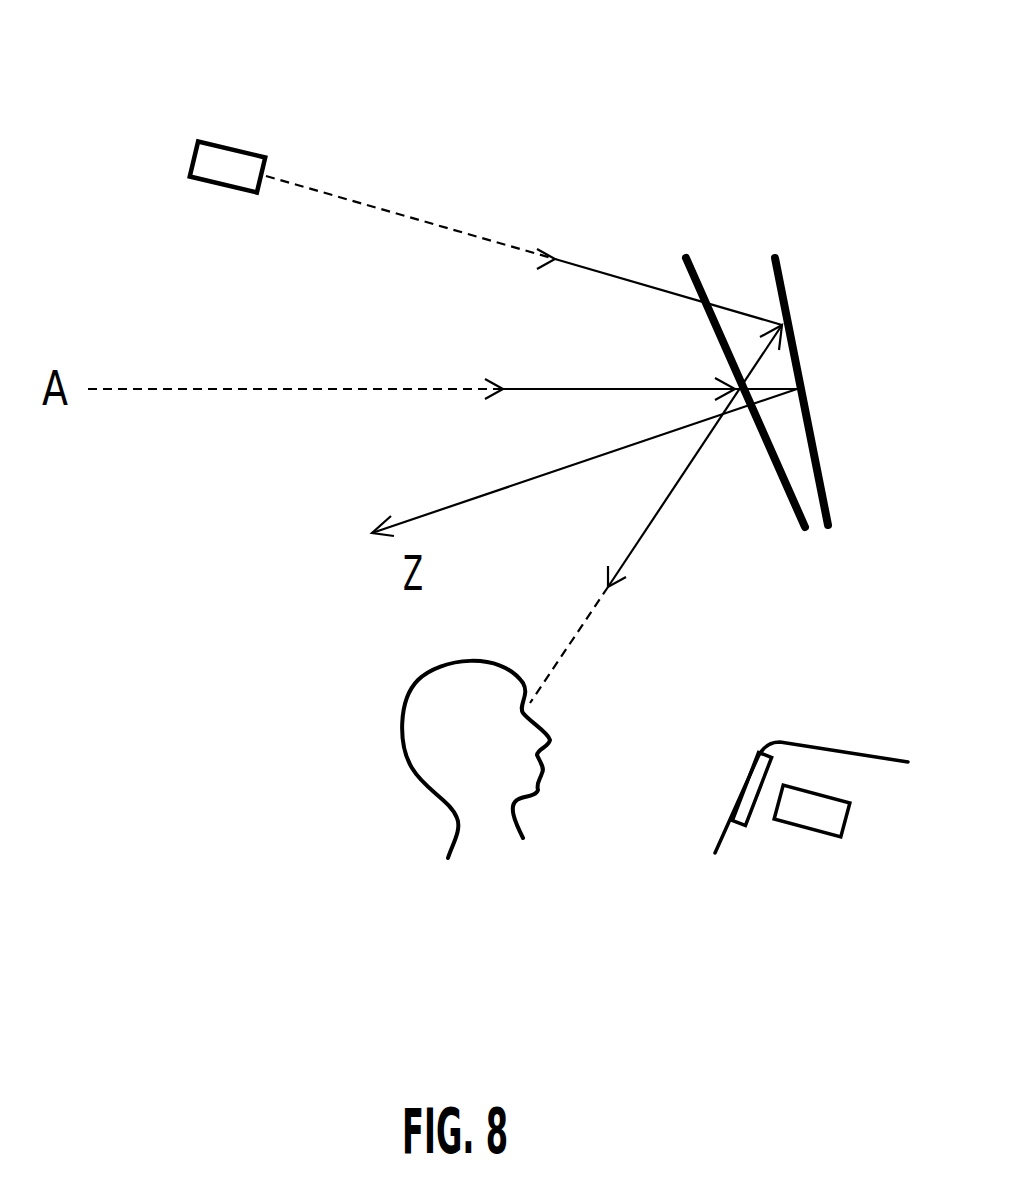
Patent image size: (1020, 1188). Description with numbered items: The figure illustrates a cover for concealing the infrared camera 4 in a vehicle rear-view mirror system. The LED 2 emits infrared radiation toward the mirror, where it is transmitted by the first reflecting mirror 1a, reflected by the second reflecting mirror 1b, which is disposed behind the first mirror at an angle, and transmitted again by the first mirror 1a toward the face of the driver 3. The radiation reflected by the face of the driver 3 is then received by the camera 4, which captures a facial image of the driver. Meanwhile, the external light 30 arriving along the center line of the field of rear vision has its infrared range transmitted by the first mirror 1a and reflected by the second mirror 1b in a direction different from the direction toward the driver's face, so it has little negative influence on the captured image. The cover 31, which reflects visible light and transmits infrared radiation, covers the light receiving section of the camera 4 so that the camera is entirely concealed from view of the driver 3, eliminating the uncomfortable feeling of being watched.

The LED 2 is at (232, 143).
The first reflecting mirror 1a is at (686, 255).
The second reflecting mirror 1b is at (775, 255).
The external light 30 is at (155, 390).
The driver 3 is at (428, 735).
The cover 31 is at (745, 790).
The camera 4 is at (820, 805).